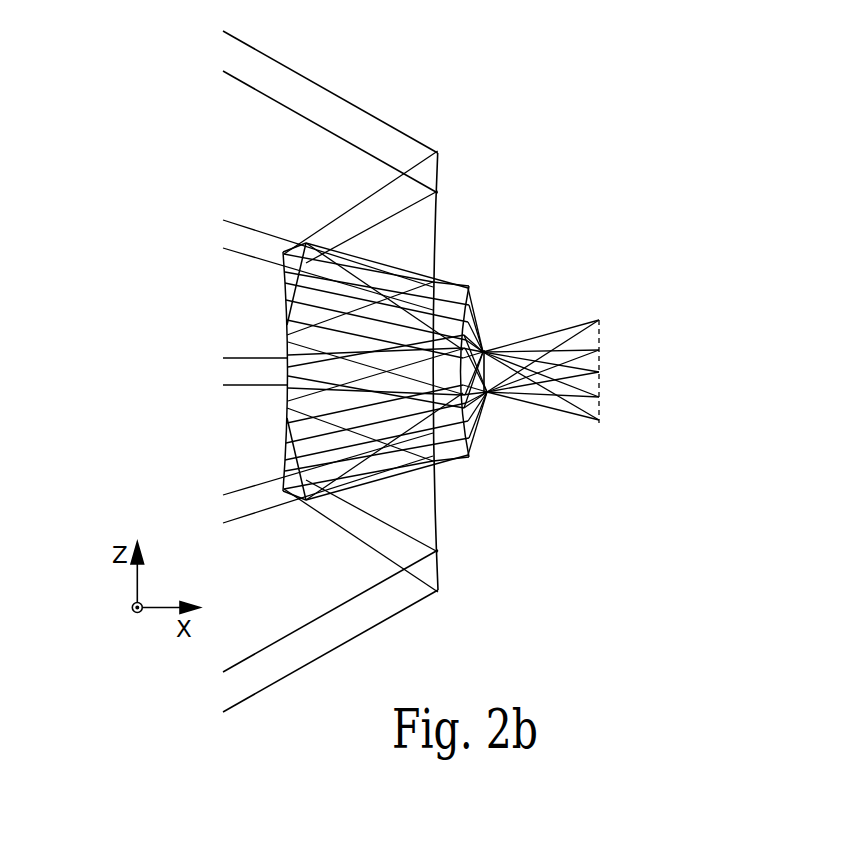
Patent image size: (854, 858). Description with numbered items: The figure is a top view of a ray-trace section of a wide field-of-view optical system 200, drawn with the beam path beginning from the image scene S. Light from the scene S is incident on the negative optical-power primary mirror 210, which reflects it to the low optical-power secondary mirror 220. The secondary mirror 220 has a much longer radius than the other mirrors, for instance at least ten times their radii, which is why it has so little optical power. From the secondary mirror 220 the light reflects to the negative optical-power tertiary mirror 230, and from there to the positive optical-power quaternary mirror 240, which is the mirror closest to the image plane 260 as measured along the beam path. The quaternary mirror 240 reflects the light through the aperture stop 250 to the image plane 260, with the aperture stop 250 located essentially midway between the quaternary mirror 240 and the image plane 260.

The WFOV optical system 200 is at (174, 70).
The primary mirror 210 is at (438, 574).
The secondary mirror 220 is at (287, 456).
The tertiary mirror 230 is at (469, 454).
The quaternary mirror 240 is at (287, 293).
The aperture stop 250 is at (487, 372).
The image plane 260 is at (622, 367).
The image scene S is at (129, 266).